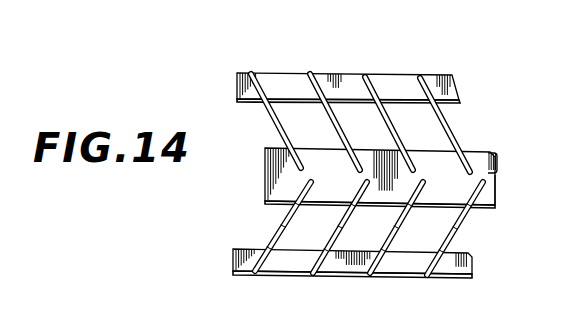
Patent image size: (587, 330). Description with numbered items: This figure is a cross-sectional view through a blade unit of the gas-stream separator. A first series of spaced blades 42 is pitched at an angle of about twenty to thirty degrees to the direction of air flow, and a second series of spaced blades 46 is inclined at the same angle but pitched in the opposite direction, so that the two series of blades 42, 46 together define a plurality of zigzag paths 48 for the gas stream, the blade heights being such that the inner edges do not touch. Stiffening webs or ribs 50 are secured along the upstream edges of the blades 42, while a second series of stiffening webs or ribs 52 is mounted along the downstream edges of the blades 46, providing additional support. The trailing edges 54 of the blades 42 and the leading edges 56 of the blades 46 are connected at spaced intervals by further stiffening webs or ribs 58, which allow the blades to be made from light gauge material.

The spaced blades 42 is at (283, 222).
The spaced blades 46 is at (310, 76).
The zigzag paths 48 is at (372, 150).
The stiffening webs or ribs 50 is at (473, 261).
The stiffening webs or ribs 52 is at (461, 90).
The trailing edges 54 is at (496, 186).
The leading edges 56 is at (494, 172).
The stiffening webs or ribs 58 is at (265, 181).